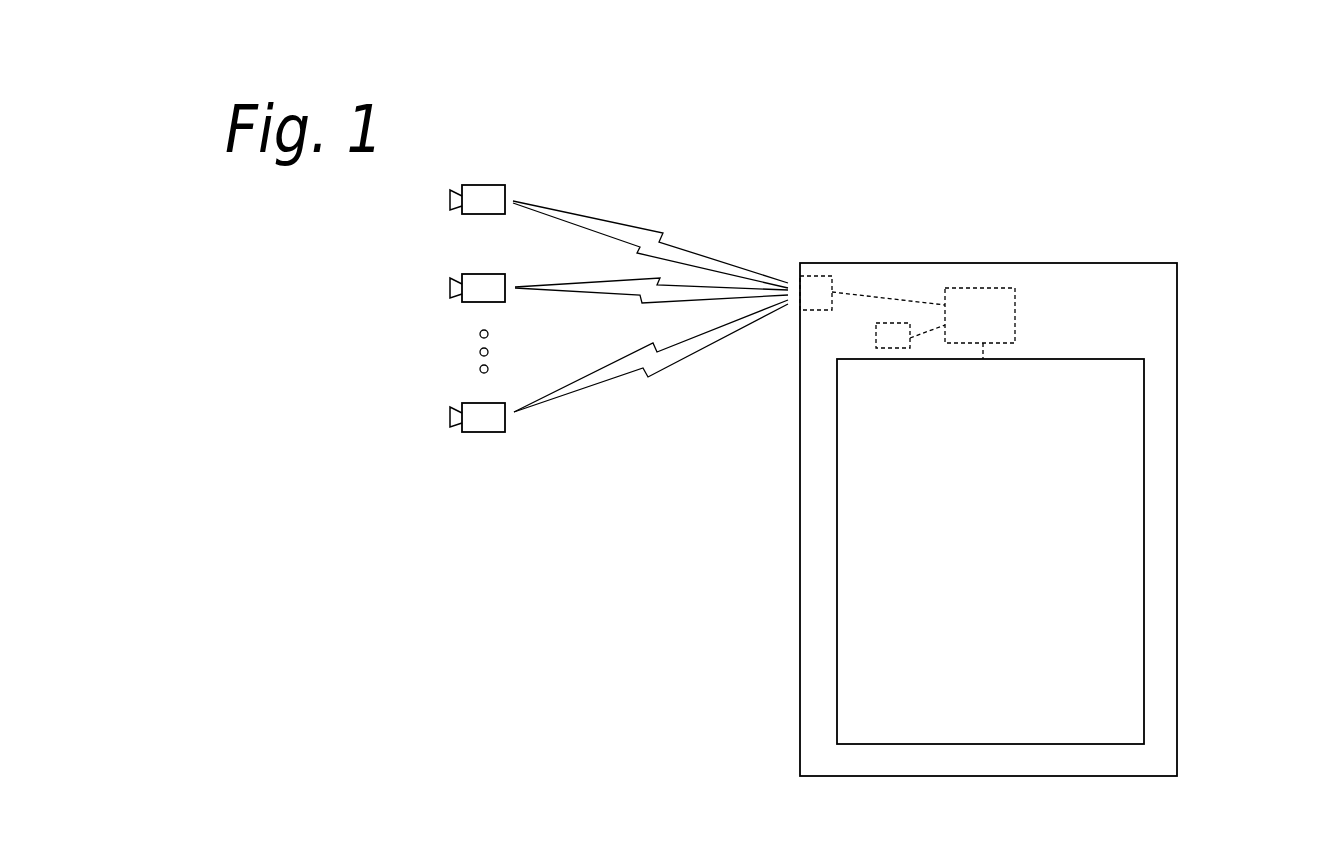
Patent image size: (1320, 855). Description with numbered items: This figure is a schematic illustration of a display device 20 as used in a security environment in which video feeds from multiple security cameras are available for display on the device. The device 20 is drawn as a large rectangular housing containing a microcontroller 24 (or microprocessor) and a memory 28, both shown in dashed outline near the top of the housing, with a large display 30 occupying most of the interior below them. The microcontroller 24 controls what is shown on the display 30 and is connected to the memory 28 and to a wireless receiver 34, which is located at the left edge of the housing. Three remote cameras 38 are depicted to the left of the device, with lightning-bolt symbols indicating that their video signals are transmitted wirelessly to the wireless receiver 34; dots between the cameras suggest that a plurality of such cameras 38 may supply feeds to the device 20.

The display device 20 is at (1195, 518).
The microcontroller 24 is at (980, 288).
The memory 28 is at (874, 337).
The display 30 is at (990, 567).
The wireless receiver 34 is at (818, 276).
The remote cameras 38 is at (455, 213).